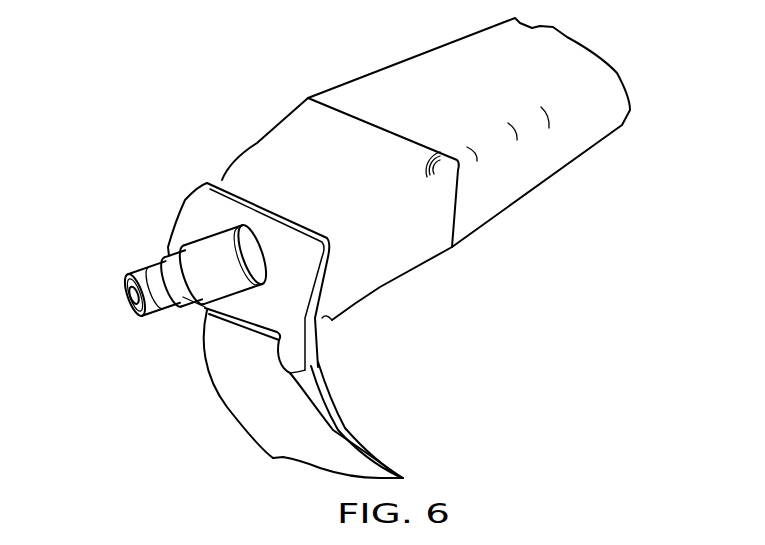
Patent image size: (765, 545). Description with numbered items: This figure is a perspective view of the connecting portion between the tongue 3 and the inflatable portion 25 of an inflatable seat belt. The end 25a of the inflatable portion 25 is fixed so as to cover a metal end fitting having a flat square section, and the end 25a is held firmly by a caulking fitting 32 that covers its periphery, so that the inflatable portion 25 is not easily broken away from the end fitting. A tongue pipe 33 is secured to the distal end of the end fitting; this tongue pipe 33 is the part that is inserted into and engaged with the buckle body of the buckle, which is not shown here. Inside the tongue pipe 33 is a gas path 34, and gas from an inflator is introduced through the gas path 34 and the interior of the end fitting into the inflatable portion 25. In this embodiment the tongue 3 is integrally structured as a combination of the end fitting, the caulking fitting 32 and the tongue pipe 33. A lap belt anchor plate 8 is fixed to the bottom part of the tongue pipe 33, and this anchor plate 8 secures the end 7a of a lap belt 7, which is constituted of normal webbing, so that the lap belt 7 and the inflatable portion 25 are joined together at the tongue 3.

The tongue 3 is at (381, 297).
The lap belt 7 is at (377, 457).
The end of lap belt 7a is at (200, 373).
The lap belt anchor plate 8 is at (310, 332).
The inflatable portion 25 is at (567, 165).
The end of inflatable portion 25a is at (430, 257).
The caulking fitting 32 is at (262, 147).
The tongue pipe 33 is at (157, 303).
The gas path 34 is at (122, 307).